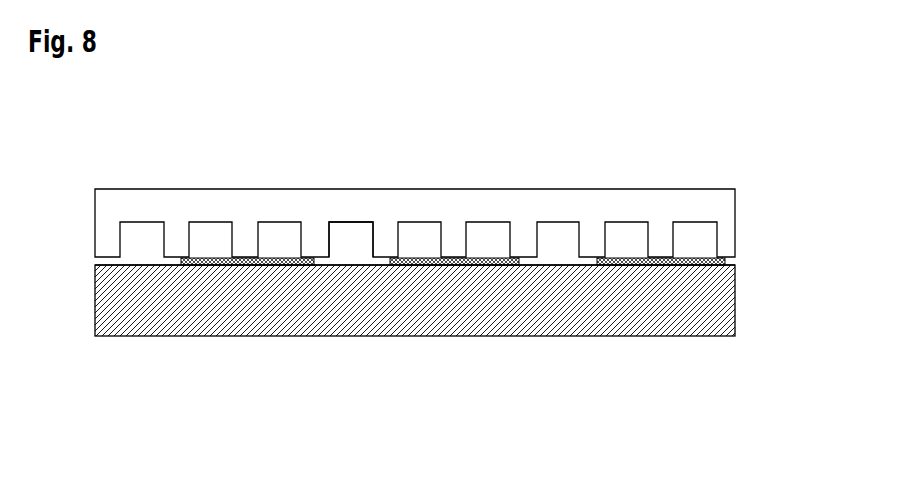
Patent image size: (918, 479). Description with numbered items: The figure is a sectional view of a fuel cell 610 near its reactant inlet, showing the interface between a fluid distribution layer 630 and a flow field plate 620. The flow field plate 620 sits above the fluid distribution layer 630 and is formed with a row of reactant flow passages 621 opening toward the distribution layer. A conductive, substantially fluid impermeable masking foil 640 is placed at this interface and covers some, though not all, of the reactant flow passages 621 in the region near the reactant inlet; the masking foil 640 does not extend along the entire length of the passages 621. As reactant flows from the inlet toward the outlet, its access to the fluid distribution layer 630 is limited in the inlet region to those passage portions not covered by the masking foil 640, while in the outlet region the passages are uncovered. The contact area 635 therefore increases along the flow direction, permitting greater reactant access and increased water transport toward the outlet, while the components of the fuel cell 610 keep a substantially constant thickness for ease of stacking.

The fuel cell 610 is at (243, 138).
The flow field plate 620 is at (547, 204).
The reactant flow passages 621 is at (348, 239).
The fluid distribution layer 630 is at (285, 303).
The contact area 635 is at (547, 266).
The masking foil 640 is at (443, 266).